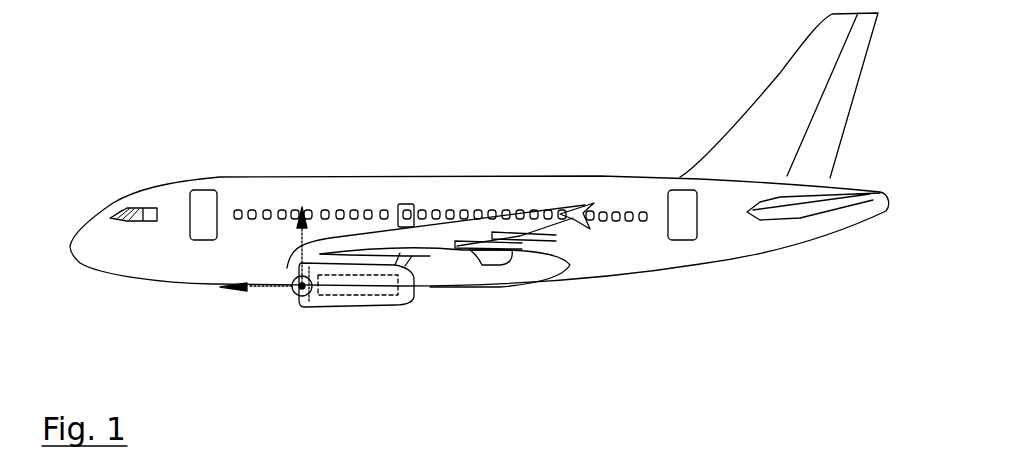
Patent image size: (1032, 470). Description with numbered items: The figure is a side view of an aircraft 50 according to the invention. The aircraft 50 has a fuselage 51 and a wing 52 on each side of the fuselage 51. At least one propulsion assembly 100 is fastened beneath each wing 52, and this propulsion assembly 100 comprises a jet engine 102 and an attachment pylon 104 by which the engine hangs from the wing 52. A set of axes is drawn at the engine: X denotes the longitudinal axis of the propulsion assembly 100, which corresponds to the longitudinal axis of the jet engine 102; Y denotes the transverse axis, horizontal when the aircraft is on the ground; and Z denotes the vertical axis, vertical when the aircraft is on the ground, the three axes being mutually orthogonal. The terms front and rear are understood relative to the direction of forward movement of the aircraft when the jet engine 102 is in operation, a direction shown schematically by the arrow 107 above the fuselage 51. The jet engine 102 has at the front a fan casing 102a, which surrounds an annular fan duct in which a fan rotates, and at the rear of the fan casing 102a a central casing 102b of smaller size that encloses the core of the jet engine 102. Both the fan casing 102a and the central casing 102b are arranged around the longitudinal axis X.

The aircraft 50 is at (479, 176).
The fuselage 51 is at (737, 239).
The wing 52 is at (490, 238).
The propulsion assembly 100 is at (228, 322).
The jet engine 102 is at (401, 339).
The fan casing 102a is at (323, 298).
The central casing 102b is at (355, 297).
The attachment pylon 104 is at (430, 263).
The arrow 107 is at (446, 56).